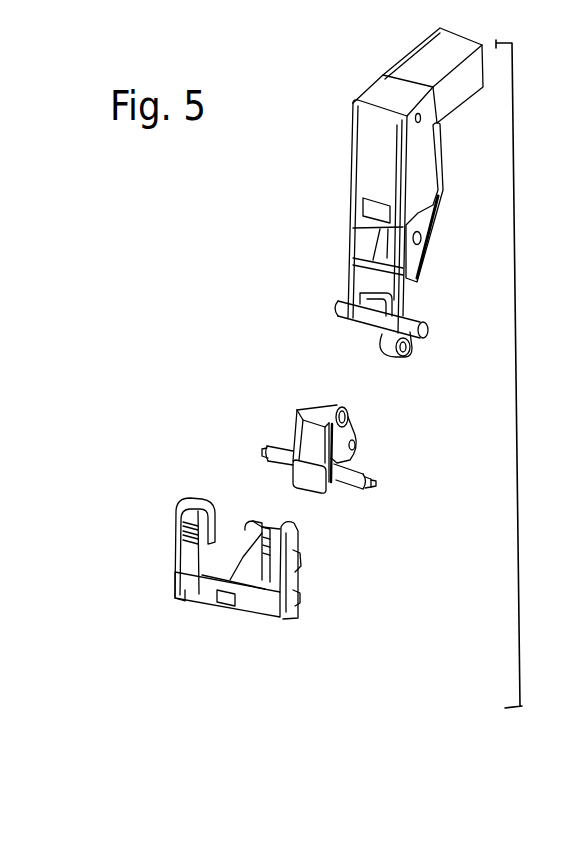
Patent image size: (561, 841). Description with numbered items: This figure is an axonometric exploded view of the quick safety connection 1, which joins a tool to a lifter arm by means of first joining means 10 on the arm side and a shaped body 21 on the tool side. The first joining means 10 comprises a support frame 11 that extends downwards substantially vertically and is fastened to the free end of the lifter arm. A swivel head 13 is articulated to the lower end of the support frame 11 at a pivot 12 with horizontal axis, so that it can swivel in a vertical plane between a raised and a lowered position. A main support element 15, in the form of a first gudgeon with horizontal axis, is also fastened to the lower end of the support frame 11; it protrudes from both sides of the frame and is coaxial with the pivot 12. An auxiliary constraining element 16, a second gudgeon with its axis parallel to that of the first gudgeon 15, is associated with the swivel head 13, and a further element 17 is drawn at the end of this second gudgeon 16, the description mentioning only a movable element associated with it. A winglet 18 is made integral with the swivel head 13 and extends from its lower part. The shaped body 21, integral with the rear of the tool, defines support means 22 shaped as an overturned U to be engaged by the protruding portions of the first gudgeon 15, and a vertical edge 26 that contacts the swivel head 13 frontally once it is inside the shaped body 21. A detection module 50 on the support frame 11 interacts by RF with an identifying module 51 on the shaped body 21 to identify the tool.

The quick safety connection 1 is at (170, 361).
The first joining means 10 is at (309, 249).
The support frame 11 is at (367, 148).
The pivot 12 is at (349, 419).
The swivel head 13 is at (297, 400).
The main support element 15 is at (430, 333).
The auxiliary constraining element 16 is at (352, 476).
The pin tip 17 is at (385, 478).
The winglet 18 is at (308, 479).
The shaped body 21 is at (167, 513).
The support means 22 is at (262, 528).
The vertical edge 26 is at (203, 592).
The detection module 50 is at (378, 210).
The identifying module 51 is at (227, 601).